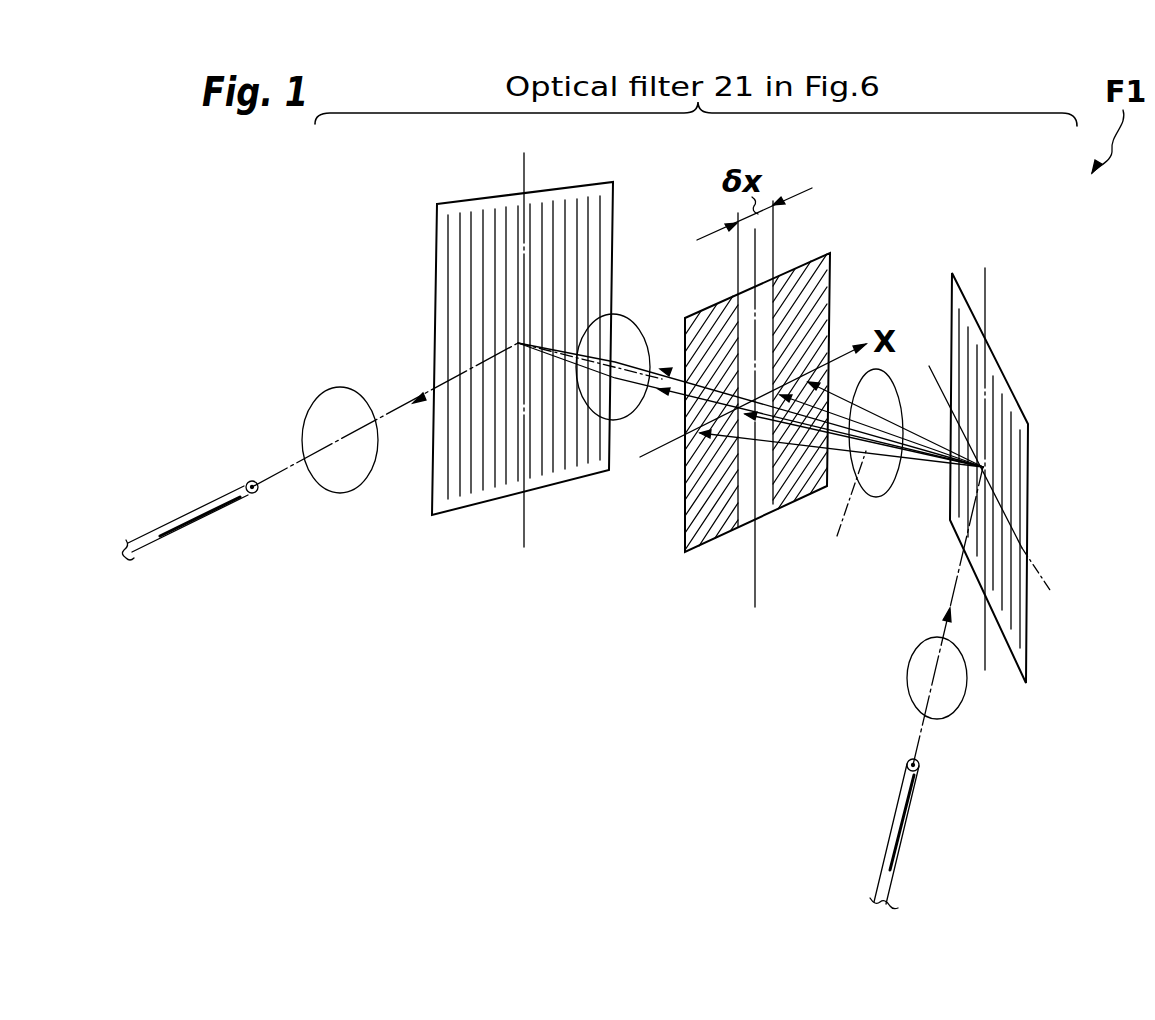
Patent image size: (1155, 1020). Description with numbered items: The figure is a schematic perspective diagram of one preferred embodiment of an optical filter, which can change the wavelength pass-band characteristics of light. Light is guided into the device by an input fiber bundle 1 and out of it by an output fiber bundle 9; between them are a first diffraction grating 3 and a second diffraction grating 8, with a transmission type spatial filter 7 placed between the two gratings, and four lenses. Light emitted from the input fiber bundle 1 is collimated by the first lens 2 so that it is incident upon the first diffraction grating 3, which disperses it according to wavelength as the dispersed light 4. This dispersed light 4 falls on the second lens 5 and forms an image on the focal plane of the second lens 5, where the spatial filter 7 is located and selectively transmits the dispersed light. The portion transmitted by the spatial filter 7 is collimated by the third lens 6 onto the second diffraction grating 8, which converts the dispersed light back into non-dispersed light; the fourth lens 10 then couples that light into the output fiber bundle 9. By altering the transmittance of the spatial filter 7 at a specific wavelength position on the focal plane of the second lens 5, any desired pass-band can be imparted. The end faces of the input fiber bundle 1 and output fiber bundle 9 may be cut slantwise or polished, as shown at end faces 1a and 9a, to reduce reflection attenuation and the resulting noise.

The input fiber bundle 1 is at (880, 867).
The end face of input fiber bundle 1a is at (912, 760).
The first lens 2 is at (962, 695).
The first diffraction grating 3 is at (997, 360).
The dispersed light 4 is at (843, 514).
The second lens 5 is at (897, 378).
The third lens 6 is at (645, 323).
The transmission type spatial filter 7 is at (685, 551).
The second diffraction grating 8 is at (568, 183).
The output fiber bundle 9 is at (203, 518).
The end face of output fiber bundle 9a is at (260, 488).
The fourth lens 10 is at (335, 385).